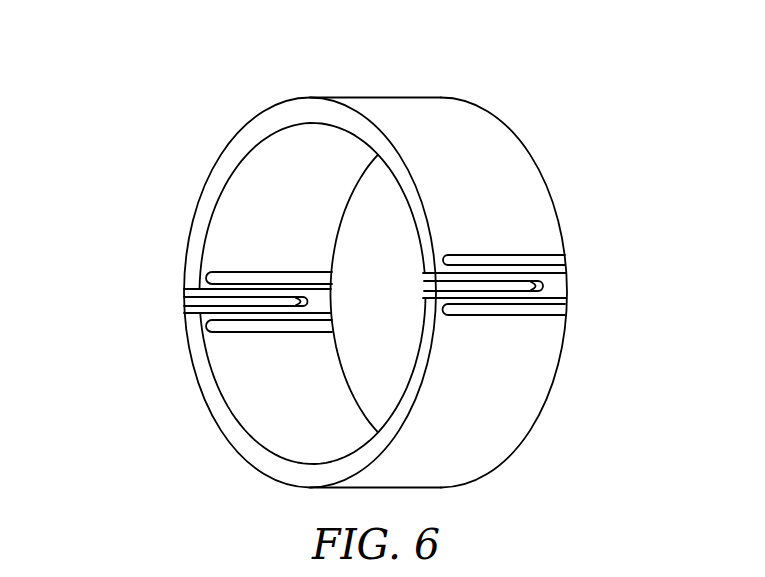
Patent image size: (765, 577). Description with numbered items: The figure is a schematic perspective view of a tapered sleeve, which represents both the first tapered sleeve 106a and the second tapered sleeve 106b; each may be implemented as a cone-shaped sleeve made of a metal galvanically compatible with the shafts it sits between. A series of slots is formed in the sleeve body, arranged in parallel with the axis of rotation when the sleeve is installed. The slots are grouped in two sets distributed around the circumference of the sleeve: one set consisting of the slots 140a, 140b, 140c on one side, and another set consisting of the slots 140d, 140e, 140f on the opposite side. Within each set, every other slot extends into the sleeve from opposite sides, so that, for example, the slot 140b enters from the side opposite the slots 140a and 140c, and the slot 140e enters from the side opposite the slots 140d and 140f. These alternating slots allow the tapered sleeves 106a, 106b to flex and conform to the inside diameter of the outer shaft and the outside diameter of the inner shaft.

The first tapered sleeve 106a is at (375, 251).
The second tapered sleeve 106b is at (365, 96).
The slot 140a is at (540, 262).
The slot 140b is at (518, 287).
The slot 140c is at (540, 310).
The slot 140d is at (225, 278).
The slot 140e is at (218, 299).
The slot 140f is at (225, 326).